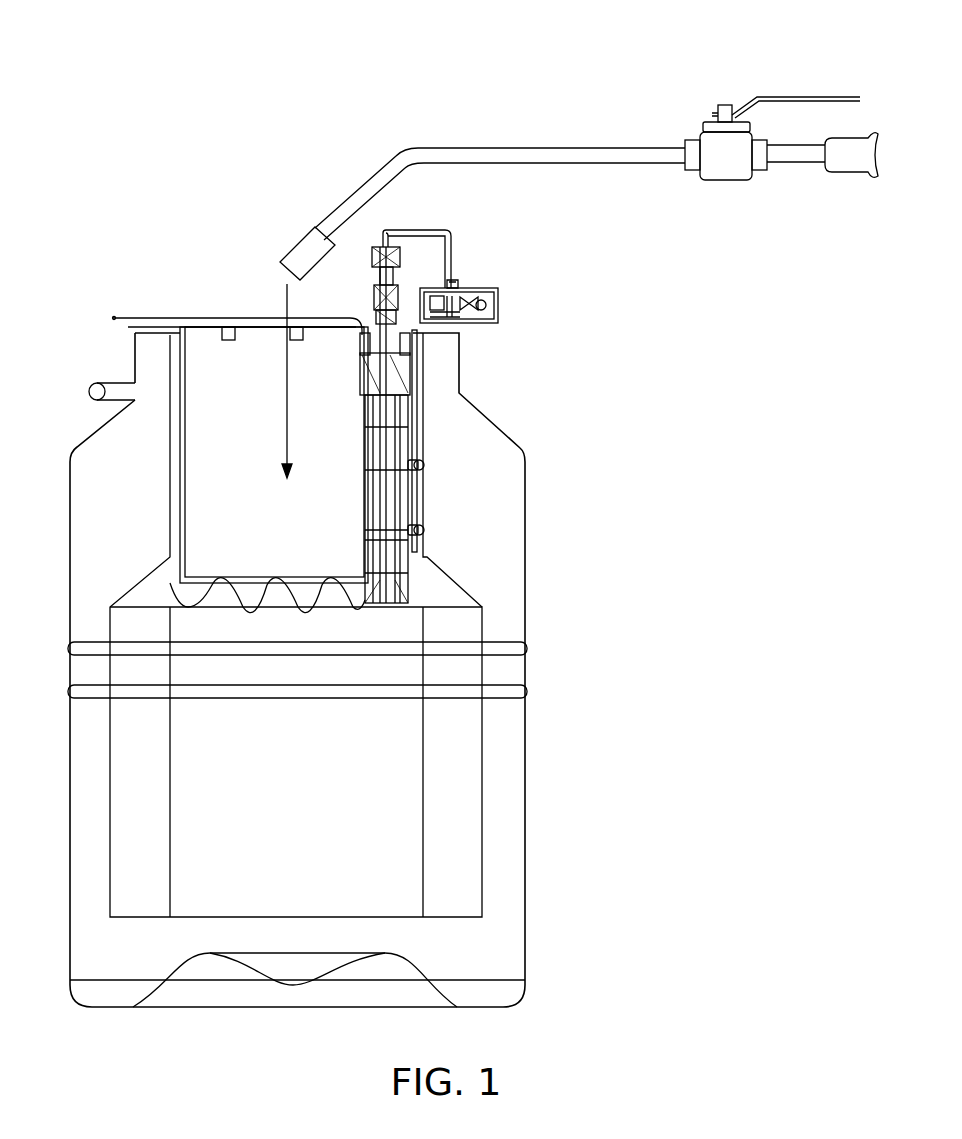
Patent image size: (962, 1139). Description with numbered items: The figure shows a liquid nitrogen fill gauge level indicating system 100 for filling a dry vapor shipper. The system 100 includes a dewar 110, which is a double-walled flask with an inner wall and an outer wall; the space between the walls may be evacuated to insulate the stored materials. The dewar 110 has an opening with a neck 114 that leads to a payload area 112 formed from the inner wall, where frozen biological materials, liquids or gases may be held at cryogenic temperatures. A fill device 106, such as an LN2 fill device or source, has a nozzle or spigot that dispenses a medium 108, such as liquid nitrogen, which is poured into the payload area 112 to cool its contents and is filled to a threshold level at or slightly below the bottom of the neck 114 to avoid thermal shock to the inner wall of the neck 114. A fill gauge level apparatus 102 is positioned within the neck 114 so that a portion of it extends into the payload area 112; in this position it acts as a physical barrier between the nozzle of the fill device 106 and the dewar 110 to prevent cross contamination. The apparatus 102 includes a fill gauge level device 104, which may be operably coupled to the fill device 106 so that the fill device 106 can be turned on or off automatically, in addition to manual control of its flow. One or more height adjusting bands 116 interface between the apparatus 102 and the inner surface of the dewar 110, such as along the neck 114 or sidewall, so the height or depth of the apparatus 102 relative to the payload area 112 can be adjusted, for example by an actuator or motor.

The fill gauge level system 100 is at (100, 88).
The fill gauge level apparatus 102 is at (165, 318).
The fill gauge level device 104 is at (498, 305).
The fill device 106 is at (507, 147).
The medium 108 is at (398, 763).
The dewar 110 is at (525, 515).
The payload area 112 is at (423, 838).
The neck 114 is at (461, 365).
The height adjusting bands 116 is at (425, 465).